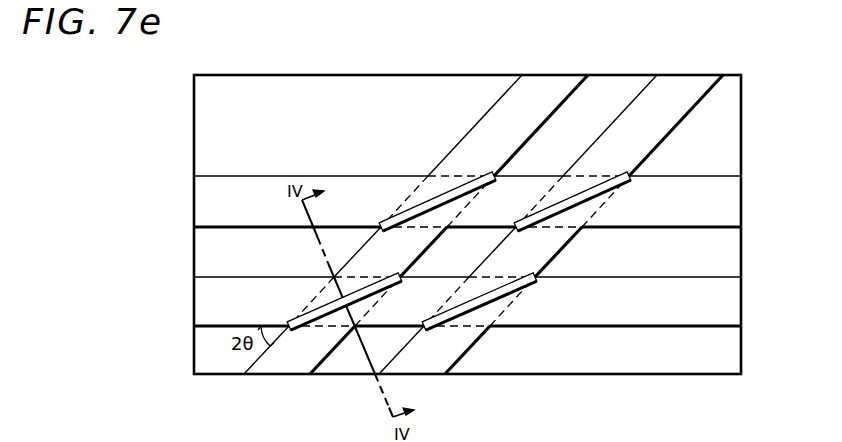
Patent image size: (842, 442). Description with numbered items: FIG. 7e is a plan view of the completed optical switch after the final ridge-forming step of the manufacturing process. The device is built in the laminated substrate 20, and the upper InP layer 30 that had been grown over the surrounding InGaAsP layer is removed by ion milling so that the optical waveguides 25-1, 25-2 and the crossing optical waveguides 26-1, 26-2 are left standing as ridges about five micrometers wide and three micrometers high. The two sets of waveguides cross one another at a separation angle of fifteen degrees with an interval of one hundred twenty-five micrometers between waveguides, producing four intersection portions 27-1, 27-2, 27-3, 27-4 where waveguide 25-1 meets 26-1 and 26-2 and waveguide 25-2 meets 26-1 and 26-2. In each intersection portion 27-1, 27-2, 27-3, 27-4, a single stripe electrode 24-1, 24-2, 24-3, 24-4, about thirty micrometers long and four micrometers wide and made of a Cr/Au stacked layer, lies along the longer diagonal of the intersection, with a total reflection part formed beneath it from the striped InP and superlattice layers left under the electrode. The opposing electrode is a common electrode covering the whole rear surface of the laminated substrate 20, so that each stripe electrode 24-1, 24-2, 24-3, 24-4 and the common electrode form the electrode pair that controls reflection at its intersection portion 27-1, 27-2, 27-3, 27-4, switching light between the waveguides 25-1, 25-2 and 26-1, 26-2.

The laminated substrate 20 is at (445, 197).
The InP layer 30 is at (194, 112).
The optical waveguide 25-1 is at (194, 299).
The optical waveguide 25-2 is at (194, 201).
The optical waveguide 26-1 is at (552, 84).
The optical waveguide 26-2 is at (682, 84).
The stripe electrode 24-1 is at (313, 306).
The stripe electrode 24-2 is at (512, 294).
The stripe electrode 24-3 is at (408, 208).
The stripe electrode 24-4 is at (598, 198).
The intersection portion 27-1 is at (342, 327).
The intersection portion 27-2 is at (485, 327).
The intersection portion 27-3 is at (438, 222).
The intersection portion 27-4 is at (580, 222).